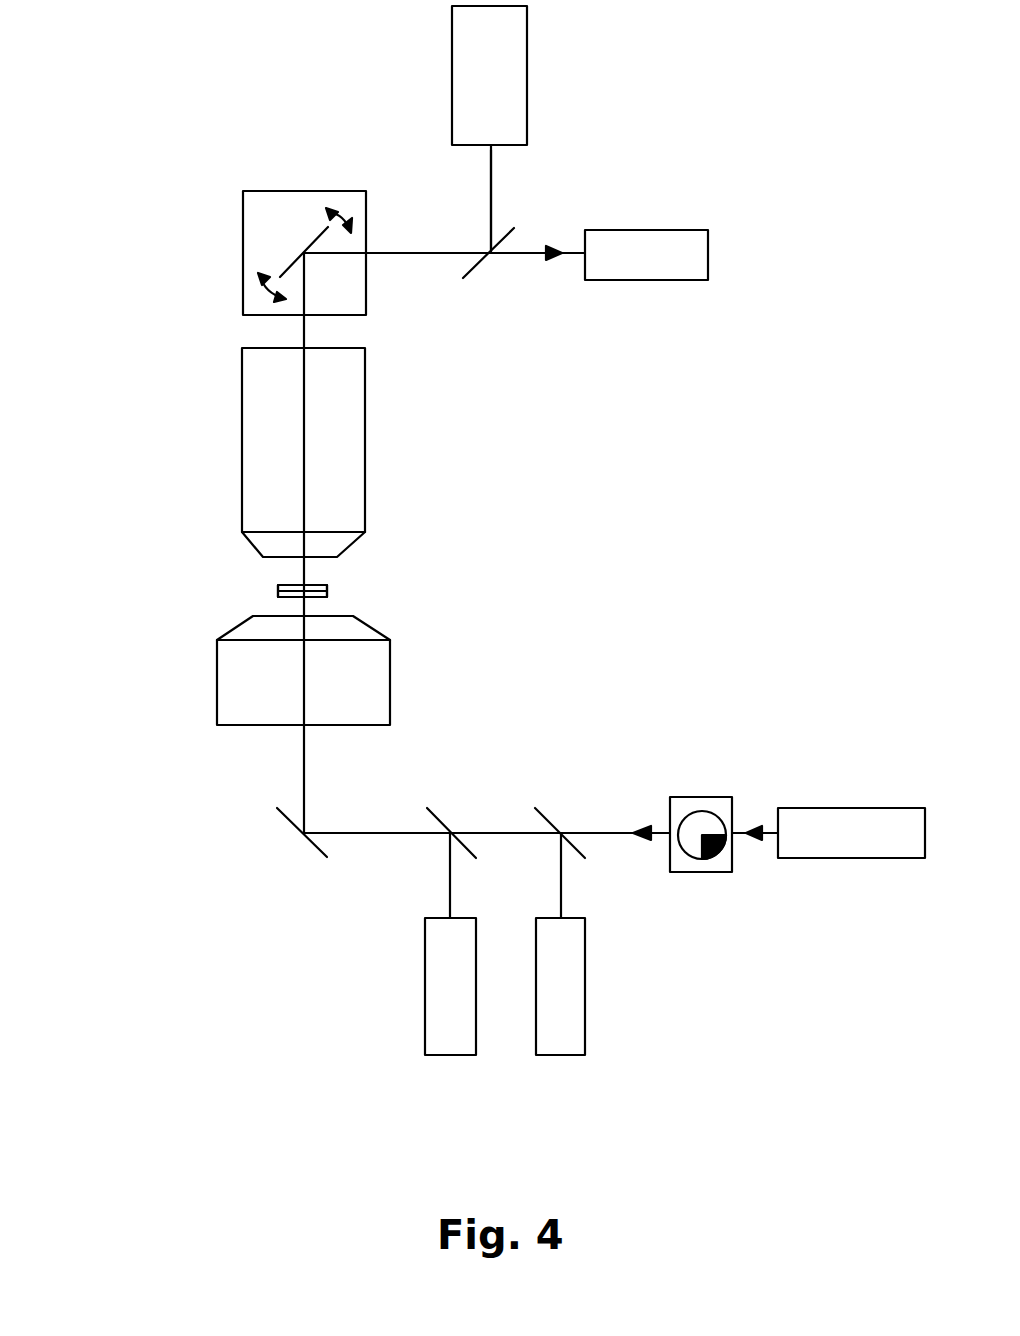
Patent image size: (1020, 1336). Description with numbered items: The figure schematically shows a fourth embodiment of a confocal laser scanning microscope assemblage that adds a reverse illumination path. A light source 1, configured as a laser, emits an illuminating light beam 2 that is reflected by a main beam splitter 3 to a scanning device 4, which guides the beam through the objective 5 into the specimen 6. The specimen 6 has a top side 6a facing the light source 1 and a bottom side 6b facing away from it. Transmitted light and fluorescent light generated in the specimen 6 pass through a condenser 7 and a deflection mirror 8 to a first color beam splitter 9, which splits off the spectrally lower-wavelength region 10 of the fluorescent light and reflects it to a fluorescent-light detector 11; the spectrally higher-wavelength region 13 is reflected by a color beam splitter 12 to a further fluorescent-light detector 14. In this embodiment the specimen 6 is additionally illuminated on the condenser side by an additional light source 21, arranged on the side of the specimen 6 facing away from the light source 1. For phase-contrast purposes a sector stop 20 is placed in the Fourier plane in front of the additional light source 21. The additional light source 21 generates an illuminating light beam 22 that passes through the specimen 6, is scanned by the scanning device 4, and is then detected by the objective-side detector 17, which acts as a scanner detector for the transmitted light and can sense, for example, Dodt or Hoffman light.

The light source 1 is at (489, 129).
The illuminating light beam 2 is at (490, 204).
The main beam splitter 3 is at (507, 240).
The scanning device 4 is at (267, 213).
The objective 5 is at (265, 463).
The specimen 6 is at (293, 590).
The top side 6a is at (323, 585).
The bottom side 6b is at (317, 598).
The condenser 7 is at (242, 688).
The deflection mirror 8 is at (293, 827).
The first color beam splitter 9 is at (440, 827).
The spectrally lower-wavelength region of the fluorescent light 10 is at (448, 878).
The fluorescent-light detector 11 is at (455, 986).
The color beam splitter 12 is at (547, 807).
The spectrally higher-wavelength region of the fluorescent light 13 is at (560, 893).
The further fluorescent-light detector 14 is at (566, 986).
The detector 17 is at (646, 257).
The sector stop 20 is at (707, 822).
The additional light source 21 is at (851, 835).
The illuminating light beam 22 is at (610, 833).